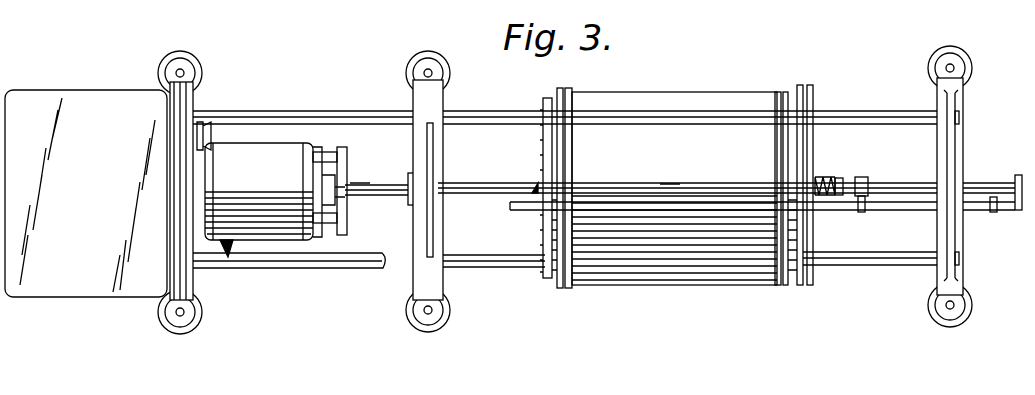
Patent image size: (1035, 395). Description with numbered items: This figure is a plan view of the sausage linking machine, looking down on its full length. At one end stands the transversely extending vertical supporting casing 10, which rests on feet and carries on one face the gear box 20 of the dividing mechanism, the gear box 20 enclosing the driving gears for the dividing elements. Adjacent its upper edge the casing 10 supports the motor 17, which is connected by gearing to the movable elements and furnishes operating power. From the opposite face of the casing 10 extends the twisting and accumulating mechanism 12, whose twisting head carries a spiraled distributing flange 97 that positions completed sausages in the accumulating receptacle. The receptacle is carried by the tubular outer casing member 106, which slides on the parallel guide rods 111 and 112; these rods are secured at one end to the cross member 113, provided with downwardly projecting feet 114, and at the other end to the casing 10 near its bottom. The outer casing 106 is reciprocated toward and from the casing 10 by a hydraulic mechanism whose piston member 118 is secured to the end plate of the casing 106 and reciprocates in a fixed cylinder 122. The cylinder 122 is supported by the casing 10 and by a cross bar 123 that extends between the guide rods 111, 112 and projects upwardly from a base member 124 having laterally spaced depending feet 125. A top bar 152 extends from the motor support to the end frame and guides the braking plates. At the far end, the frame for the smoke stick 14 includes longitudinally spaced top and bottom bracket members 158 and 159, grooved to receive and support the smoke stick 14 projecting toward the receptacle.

The supporting plate-like casing 10 is at (196, 101).
The twisting and accumulating mechanism 12 is at (531, 232).
The smoke stick 14 is at (504, 209).
The motor 17 is at (276, 191).
The gear box 20 is at (67, 90).
The spiraled distributing flange 97 is at (229, 258).
The tubular outer casing member 106 is at (678, 92).
The guide rod 111 is at (483, 111).
The guide rod 112 is at (308, 268).
The cross member 113 is at (965, 104).
The feet 114 is at (970, 72).
The piston member 118 is at (484, 183).
The fixed cylinder 122 is at (369, 196).
The cross bar 123 is at (434, 140).
The base member 124 is at (418, 276).
The feet 125 is at (408, 72).
The top bar 152 is at (359, 185).
The top bracket member 158 is at (994, 213).
The bottom bracket member 159 is at (862, 213).